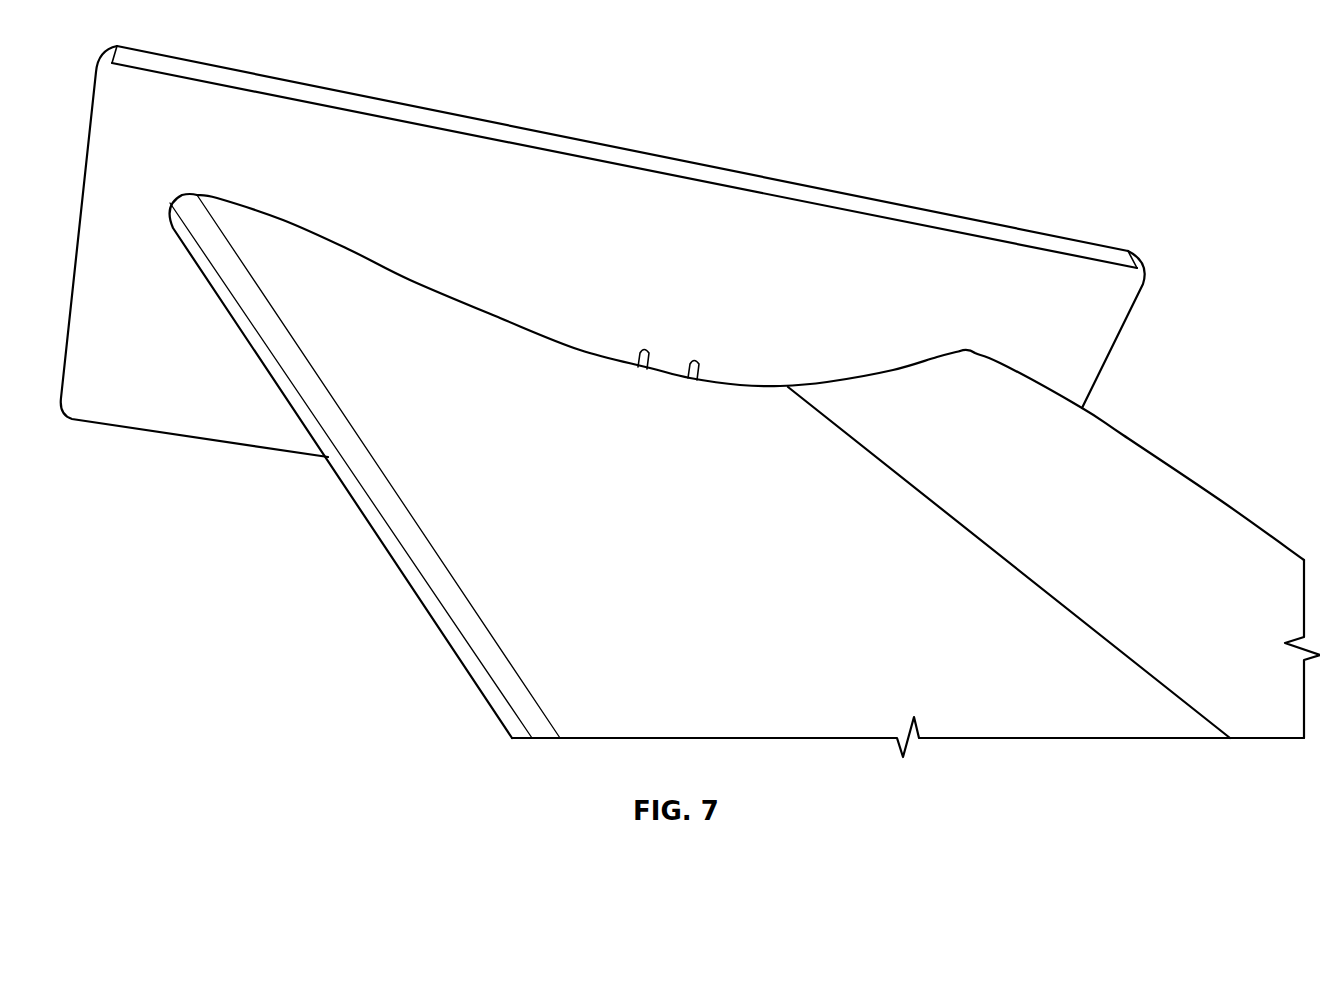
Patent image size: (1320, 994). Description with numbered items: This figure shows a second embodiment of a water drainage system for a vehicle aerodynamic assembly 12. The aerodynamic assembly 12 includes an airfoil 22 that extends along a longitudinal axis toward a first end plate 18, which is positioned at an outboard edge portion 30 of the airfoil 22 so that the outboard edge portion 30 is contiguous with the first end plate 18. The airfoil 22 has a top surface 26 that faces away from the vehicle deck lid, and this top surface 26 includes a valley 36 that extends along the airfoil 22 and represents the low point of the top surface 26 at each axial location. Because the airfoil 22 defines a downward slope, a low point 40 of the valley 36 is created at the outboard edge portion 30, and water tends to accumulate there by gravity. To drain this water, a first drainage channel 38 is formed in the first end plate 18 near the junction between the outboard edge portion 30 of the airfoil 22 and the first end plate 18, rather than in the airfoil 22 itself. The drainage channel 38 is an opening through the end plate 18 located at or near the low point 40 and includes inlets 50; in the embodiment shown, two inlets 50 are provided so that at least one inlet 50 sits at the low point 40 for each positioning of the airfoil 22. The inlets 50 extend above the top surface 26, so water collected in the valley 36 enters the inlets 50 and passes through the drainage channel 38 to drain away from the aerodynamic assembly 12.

The aerodynamic assembly 12 is at (603, 251).
The first end plate 18 is at (795, 225).
The airfoil 22 is at (1172, 512).
The top surface 26 is at (770, 597).
The outboard edge portion 30 is at (388, 439).
The valley 36 is at (984, 525).
The first drainage channel 38 is at (665, 341).
The low point 40 is at (677, 388).
The inlet 50 is at (646, 342).